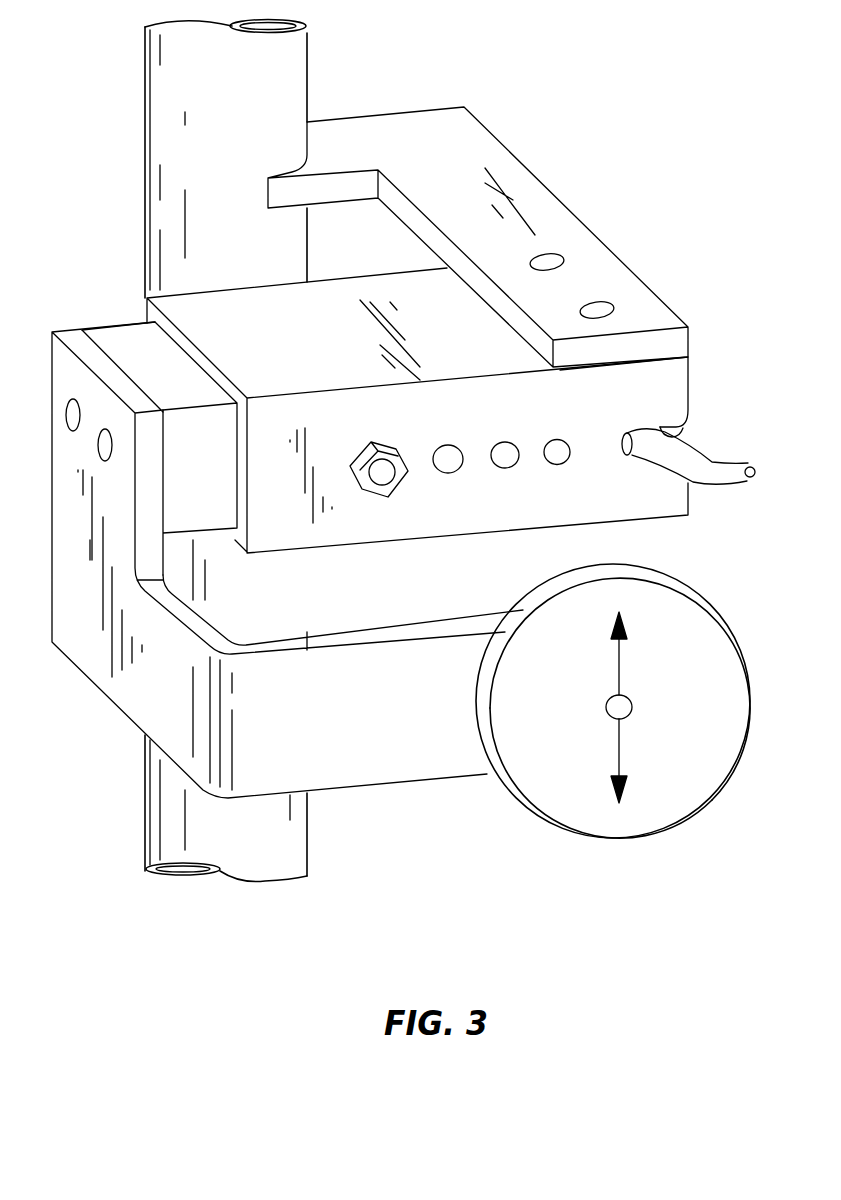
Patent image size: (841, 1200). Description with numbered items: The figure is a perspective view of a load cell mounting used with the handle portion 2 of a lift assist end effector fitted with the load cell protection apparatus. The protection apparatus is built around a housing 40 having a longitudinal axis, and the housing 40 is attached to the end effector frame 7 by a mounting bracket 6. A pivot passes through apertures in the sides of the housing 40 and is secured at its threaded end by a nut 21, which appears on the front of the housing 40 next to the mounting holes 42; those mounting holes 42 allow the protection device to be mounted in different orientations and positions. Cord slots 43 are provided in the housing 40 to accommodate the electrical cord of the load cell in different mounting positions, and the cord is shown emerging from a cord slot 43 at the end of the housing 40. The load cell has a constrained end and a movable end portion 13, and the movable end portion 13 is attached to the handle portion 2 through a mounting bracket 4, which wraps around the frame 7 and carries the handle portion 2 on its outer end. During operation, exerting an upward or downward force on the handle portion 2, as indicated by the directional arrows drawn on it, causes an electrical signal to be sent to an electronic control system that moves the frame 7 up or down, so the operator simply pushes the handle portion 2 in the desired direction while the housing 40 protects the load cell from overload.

The handle portion 2 is at (665, 797).
The mounting bracket 4 is at (383, 762).
The mounting bracket 6 is at (508, 170).
The end effector frame 7 is at (160, 182).
The movable end portion 13 is at (159, 448).
The nut 21 is at (395, 457).
The housing 40 is at (417, 410).
The mounting holes 42 is at (503, 453).
The cord slots 43 is at (688, 428).